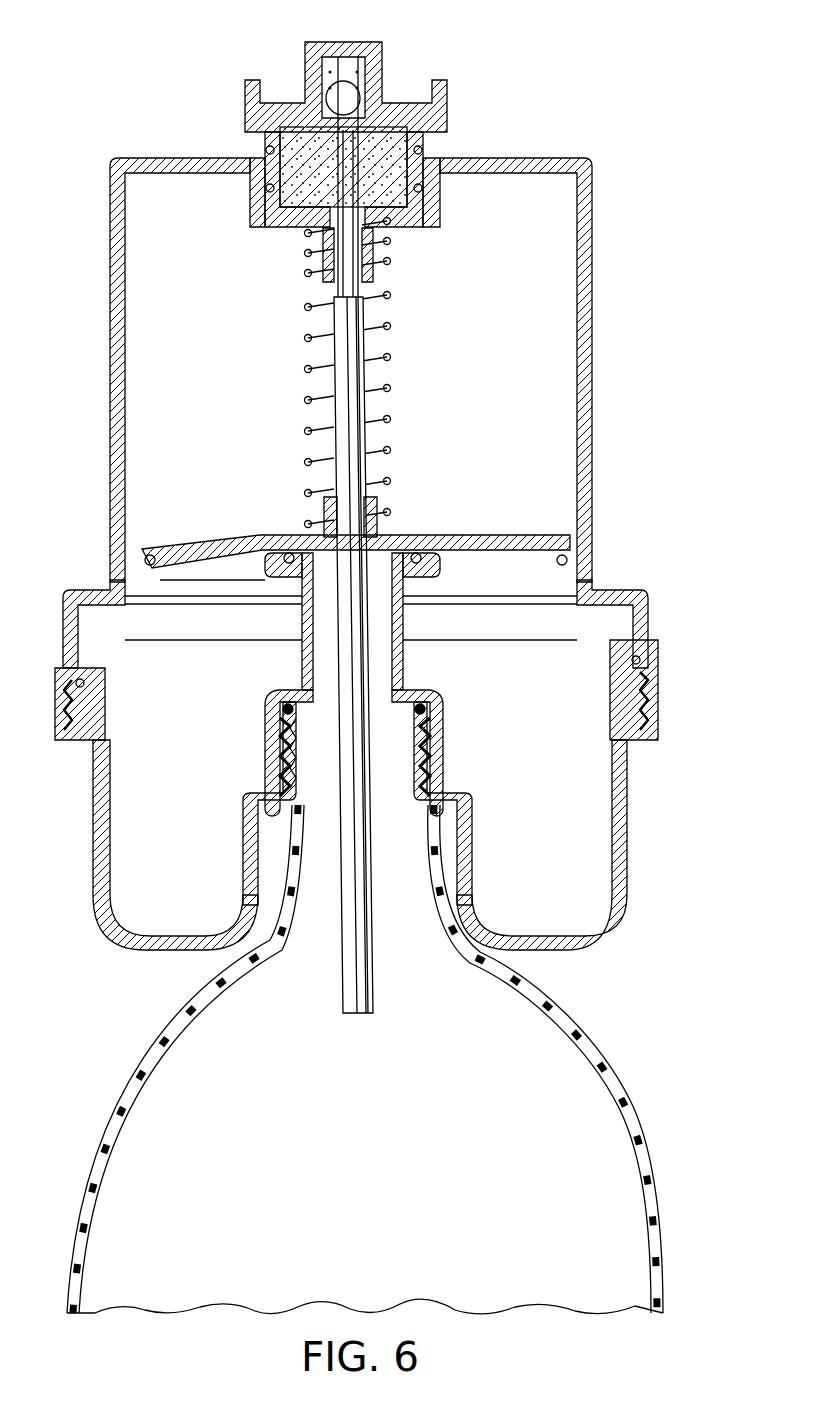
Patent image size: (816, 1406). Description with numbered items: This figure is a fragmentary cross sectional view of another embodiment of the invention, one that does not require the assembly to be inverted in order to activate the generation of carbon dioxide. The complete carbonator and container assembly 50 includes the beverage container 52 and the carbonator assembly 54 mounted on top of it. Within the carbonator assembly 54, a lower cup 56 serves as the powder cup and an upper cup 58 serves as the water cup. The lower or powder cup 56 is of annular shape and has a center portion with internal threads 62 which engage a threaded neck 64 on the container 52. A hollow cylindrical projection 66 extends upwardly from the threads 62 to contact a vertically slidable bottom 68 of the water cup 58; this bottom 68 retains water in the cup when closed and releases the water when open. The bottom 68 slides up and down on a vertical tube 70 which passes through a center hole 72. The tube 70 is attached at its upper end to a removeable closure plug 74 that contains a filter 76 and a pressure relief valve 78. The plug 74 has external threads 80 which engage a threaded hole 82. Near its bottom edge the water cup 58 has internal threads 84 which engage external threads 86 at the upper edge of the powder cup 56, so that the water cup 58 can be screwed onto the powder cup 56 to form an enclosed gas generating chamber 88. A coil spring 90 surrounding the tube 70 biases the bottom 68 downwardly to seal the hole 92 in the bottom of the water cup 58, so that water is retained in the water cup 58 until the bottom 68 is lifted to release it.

The carbonator and container assembly 50 is at (522, 142).
The beverage container 52 is at (645, 1122).
The carbonator assembly 54 is at (598, 428).
The lower cup 56 is at (630, 838).
The upper cup 58 is at (593, 348).
The internal threads 62 is at (284, 715).
The threaded neck 64 is at (284, 770).
The hollow cylindrical projection 66 is at (407, 665).
The vertically slidable bottom 68 is at (548, 538).
The vertical tube 70 is at (325, 410).
The center hole 72 is at (365, 502).
The removeable closure plug 74 is at (247, 132).
The filter 76 is at (295, 210).
The pressure relief valve 78 is at (357, 92).
The external threads 80 is at (440, 152).
The threaded hole 82 is at (440, 186).
The internal threads 84 is at (640, 662).
The external threads 86 is at (650, 705).
The gas generating chamber 88 is at (538, 725).
The coil spring 90 is at (388, 364).
The hole 92 is at (195, 582).